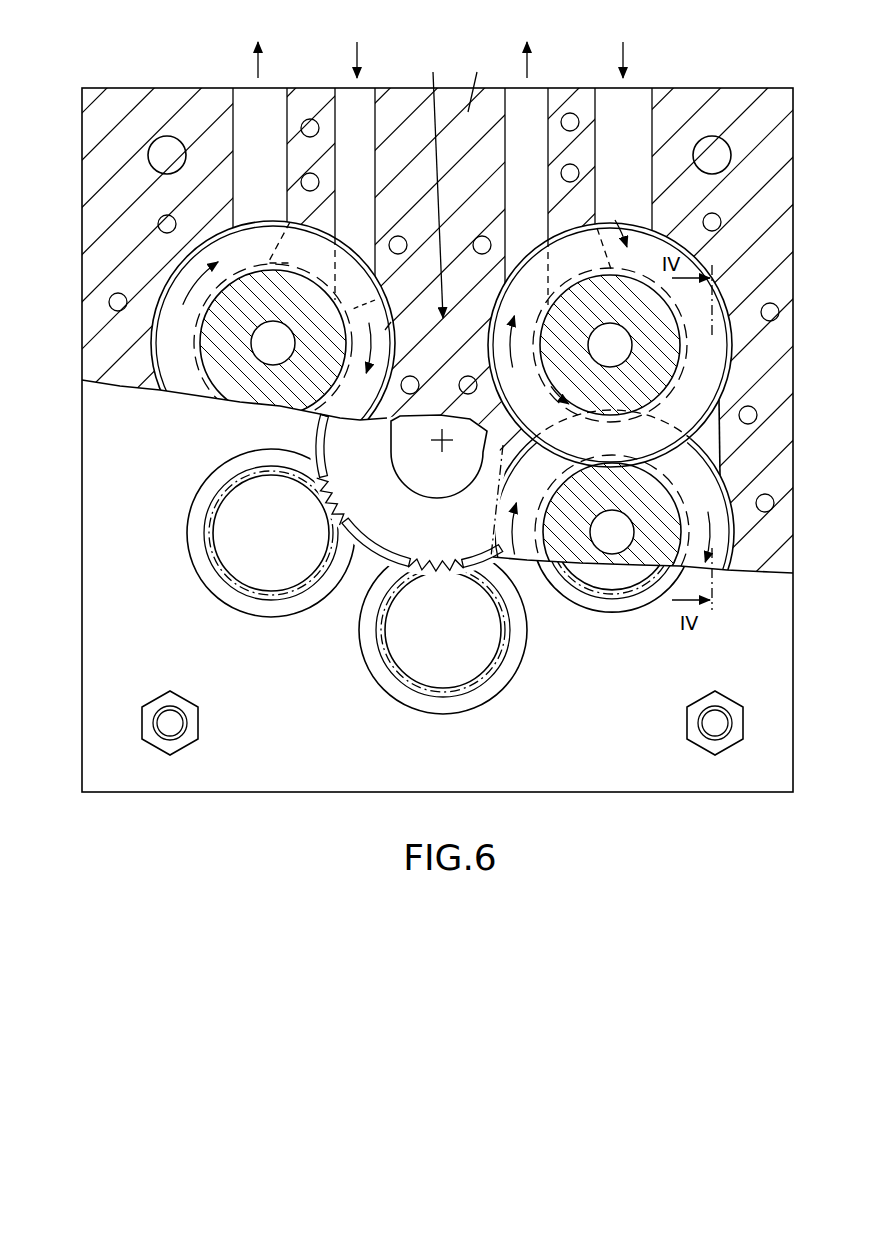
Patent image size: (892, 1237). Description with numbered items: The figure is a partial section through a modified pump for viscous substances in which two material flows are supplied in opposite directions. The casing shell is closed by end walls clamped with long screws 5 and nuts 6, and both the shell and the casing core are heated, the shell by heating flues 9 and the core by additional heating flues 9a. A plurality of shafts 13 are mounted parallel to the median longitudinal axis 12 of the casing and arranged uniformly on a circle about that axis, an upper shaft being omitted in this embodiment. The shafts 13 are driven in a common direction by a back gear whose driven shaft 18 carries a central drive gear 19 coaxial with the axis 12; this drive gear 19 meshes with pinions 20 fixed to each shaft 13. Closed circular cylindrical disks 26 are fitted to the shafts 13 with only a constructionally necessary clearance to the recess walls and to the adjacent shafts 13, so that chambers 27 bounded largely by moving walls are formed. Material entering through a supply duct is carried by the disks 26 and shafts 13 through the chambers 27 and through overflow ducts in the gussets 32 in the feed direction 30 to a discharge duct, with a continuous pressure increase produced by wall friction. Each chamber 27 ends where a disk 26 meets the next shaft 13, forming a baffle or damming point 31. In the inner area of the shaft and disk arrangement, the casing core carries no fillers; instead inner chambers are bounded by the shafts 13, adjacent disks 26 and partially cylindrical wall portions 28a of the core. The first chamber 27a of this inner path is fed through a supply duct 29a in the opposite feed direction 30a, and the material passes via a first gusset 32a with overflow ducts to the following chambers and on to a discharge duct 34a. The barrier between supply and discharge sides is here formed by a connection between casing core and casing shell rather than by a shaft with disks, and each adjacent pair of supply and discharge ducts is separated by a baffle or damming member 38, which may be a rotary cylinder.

The long screws 5 is at (170, 724).
The nuts 6 is at (442, 723).
The heating flues 9 is at (160, 222).
The heating flues 9a is at (490, 243).
The median longitudinal axis 12 is at (445, 441).
The shafts 13 is at (256, 390).
The driven shaft 18 is at (439, 456).
The drive gear 19 is at (382, 534).
The pinions 20 is at (263, 605).
The disks 26 is at (442, 415).
The chambers 27 is at (185, 338).
The first chamber 27a is at (375, 300).
The partially cylindrical wall portions 28a is at (391, 322).
The supply duct 29a is at (354, 116).
The feed direction 30 is at (441, 43).
The feed direction 30a is at (405, 348).
The baffle or damming points 31 is at (578, 414).
The gussets 32 is at (707, 441).
The first gusset 32a is at (383, 417).
The discharge duct 34a is at (530, 122).
The baffle or damming member 38 is at (318, 221).